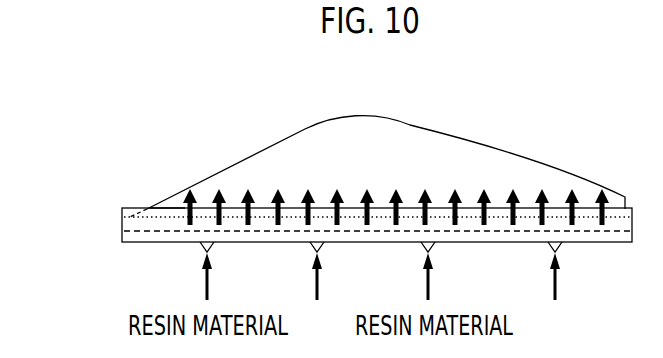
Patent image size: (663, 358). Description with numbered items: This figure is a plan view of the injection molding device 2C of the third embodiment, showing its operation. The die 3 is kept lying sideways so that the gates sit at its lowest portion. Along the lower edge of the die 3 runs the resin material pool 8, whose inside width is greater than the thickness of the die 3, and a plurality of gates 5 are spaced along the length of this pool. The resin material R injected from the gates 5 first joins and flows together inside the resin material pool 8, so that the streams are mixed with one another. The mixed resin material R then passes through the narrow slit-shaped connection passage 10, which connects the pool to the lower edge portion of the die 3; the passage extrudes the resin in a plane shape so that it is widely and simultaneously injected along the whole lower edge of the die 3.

The injection molding device 2C is at (78, 112).
The die 3 is at (244, 157).
The resin material pool 8 is at (167, 206).
The resin material R is at (281, 189).
The gate 5 is at (201, 246).
The connection passage 10 is at (384, 233).